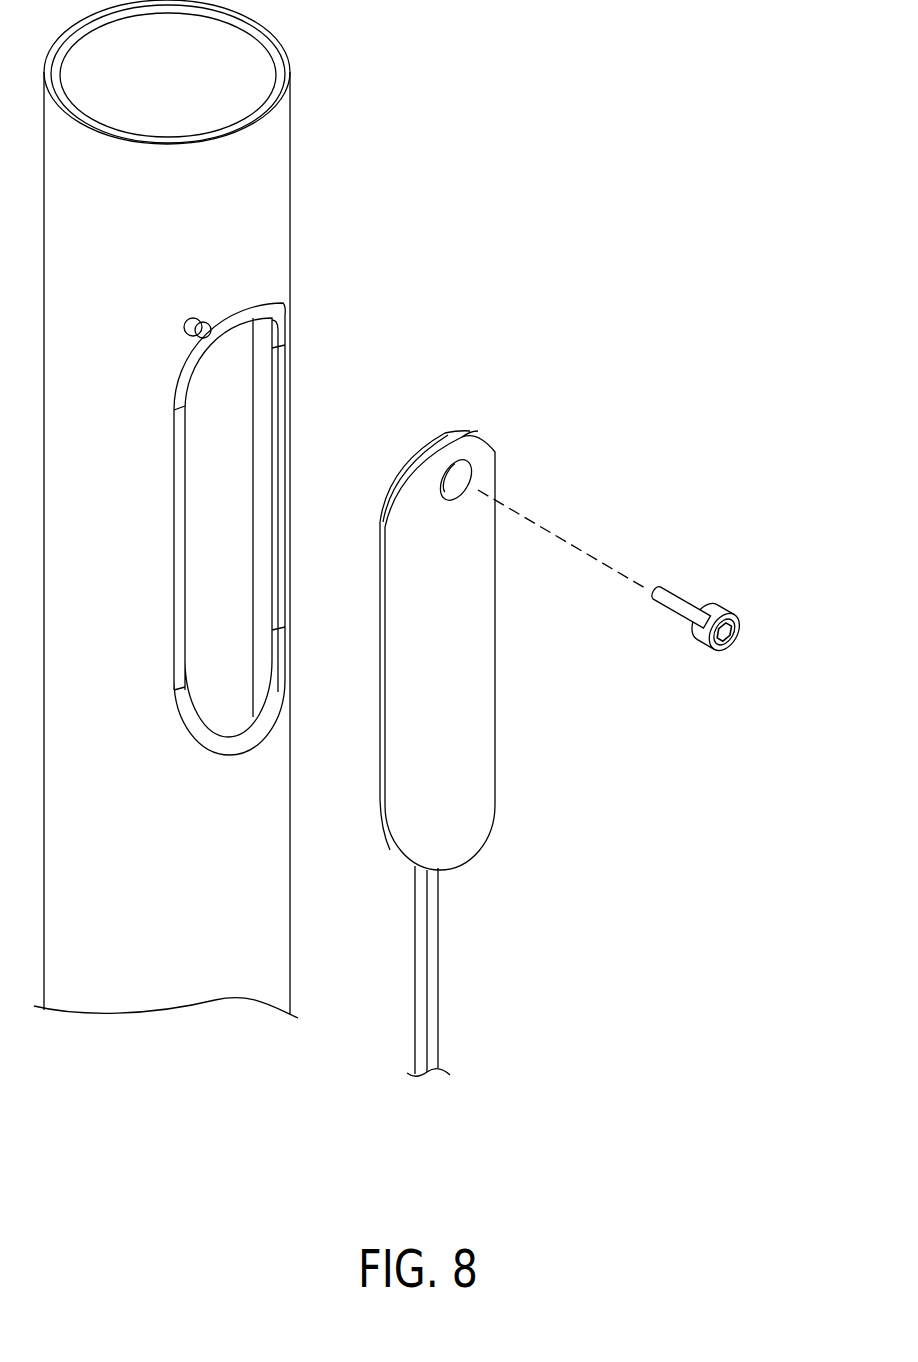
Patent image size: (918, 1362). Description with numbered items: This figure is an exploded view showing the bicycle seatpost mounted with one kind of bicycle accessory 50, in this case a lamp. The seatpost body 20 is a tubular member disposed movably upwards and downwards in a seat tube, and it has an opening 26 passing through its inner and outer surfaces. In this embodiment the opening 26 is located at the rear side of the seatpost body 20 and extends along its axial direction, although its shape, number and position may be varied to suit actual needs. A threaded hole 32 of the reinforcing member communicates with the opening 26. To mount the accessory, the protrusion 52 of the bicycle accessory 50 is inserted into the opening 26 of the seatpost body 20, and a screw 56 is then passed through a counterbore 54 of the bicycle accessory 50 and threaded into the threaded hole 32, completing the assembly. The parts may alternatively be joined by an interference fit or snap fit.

The seatpost body 20 is at (225, 509).
The opening 26 is at (262, 450).
The threaded hole 32 is at (206, 319).
The bicycle accessory 50 is at (513, 695).
The protrusion 52 is at (443, 440).
The counterbore 54 is at (466, 473).
The screw 56 is at (698, 607).